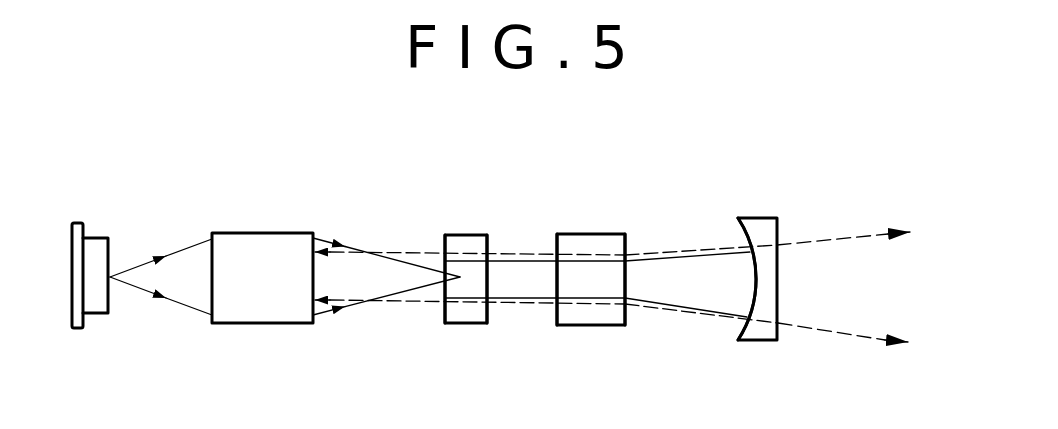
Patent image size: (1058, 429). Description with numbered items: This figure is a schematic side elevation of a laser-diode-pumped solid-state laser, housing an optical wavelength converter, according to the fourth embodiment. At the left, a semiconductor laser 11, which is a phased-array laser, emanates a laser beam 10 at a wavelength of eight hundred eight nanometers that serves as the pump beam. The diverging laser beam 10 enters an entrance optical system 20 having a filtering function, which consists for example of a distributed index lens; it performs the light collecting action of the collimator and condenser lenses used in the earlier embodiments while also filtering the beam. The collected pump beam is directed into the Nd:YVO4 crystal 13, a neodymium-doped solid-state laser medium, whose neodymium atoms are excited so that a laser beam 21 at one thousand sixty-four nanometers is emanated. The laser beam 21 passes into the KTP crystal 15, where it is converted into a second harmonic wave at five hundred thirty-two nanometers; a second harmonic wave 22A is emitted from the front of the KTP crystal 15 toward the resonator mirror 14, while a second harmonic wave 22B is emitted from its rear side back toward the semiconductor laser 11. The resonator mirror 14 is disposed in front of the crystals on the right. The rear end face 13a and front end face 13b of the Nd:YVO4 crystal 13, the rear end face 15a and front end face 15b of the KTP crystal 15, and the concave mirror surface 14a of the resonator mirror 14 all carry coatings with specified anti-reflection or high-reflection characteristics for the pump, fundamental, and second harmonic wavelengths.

The laser beam 10 is at (183, 247).
The semiconductor laser 11 is at (97, 238).
The entrance optical system 20 is at (248, 238).
The Nd:YVO4 crystal 13 is at (455, 232).
The rear end face 13a is at (445, 245).
The front end face 13b is at (488, 240).
The KTP crystal 15 is at (596, 232).
The rear end face 15a is at (557, 247).
The front end face 15b is at (625, 246).
The resonator mirror 14 is at (762, 216).
The concave mirror surface 14a is at (742, 322).
The laser beam 21 is at (679, 305).
The second harmonic wave 22A is at (810, 330).
The second harmonic wave 22B is at (512, 303).